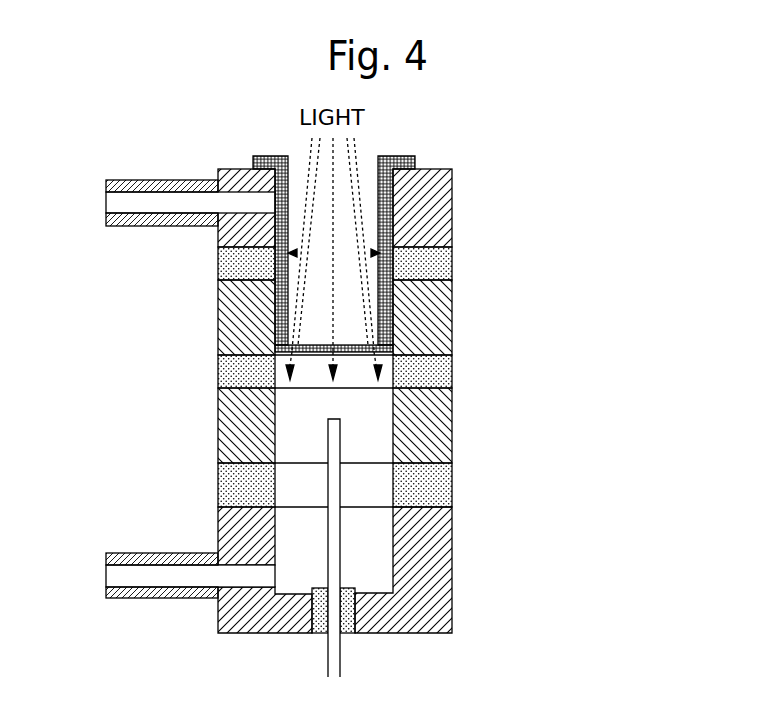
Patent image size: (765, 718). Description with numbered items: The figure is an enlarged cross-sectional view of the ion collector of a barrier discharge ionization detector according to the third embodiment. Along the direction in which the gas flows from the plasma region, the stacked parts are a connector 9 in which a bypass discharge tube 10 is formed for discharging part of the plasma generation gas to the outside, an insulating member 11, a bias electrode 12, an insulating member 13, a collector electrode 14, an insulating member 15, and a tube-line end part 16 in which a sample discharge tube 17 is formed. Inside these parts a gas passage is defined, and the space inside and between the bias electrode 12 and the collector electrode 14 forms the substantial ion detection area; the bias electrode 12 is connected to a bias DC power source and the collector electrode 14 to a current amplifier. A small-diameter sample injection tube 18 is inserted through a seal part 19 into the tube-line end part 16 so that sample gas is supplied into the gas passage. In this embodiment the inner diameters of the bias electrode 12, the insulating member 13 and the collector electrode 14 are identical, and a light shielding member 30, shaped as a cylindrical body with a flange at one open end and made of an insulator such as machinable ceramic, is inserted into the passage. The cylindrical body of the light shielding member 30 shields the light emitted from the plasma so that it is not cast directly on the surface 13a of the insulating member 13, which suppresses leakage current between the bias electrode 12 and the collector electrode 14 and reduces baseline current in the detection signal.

The connector 9 is at (447, 170).
The bypass discharge tube 10 is at (135, 180).
The insulating member 11 is at (218, 268).
The bias electrode 12 is at (452, 302).
The insulating member 13 is at (218, 373).
The surface of the insulating member 13a is at (392, 370).
The collector electrode 14 is at (452, 420).
The insulating member 15 is at (218, 477).
The tube-line end part 16 is at (410, 633).
The sample discharge tube 17 is at (155, 598).
The sample injection tube 18 is at (342, 564).
The seal part 19 is at (310, 637).
The light shielding member 30 is at (392, 222).